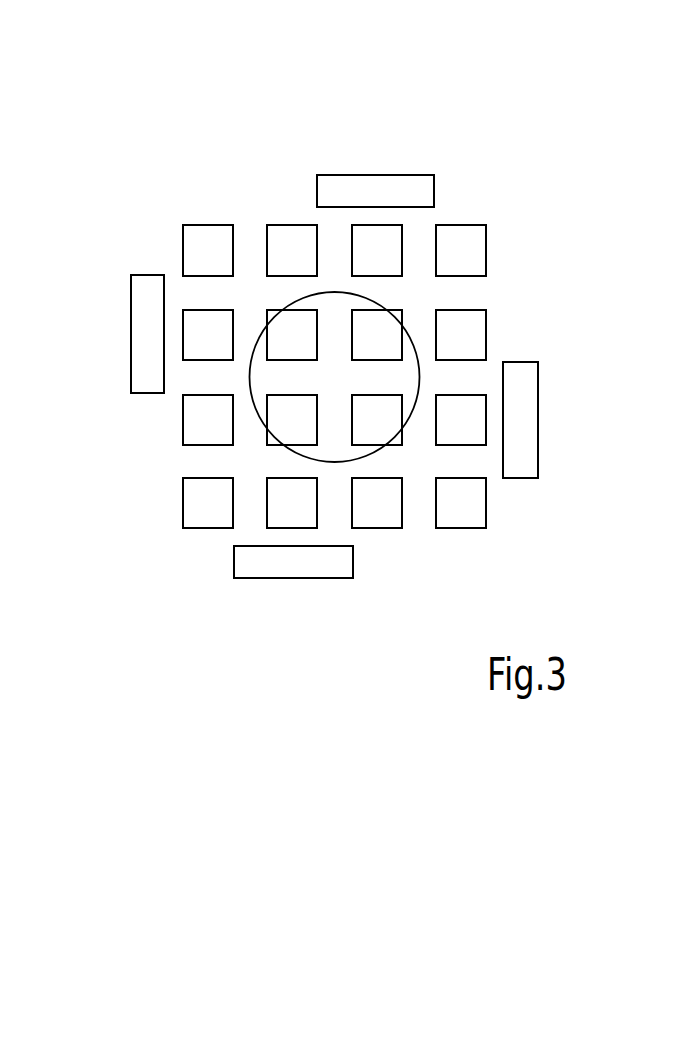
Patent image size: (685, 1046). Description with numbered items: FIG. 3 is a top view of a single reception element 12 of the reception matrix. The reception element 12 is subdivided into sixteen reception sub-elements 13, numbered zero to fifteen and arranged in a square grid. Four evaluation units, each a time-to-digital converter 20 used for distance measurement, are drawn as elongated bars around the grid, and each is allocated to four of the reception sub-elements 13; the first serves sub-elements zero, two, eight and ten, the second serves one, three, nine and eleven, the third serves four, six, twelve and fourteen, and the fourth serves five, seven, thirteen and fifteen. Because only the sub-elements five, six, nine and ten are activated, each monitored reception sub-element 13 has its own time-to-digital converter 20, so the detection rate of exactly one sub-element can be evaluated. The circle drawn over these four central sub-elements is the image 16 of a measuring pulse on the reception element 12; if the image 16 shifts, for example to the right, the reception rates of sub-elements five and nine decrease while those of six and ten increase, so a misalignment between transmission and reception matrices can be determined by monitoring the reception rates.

The reception element 12 is at (360, 382).
The reception sub-element 13 is at (287, 223).
The image of a measuring pulse 16 is at (380, 447).
The time-to-digital converter 20 is at (390, 156).